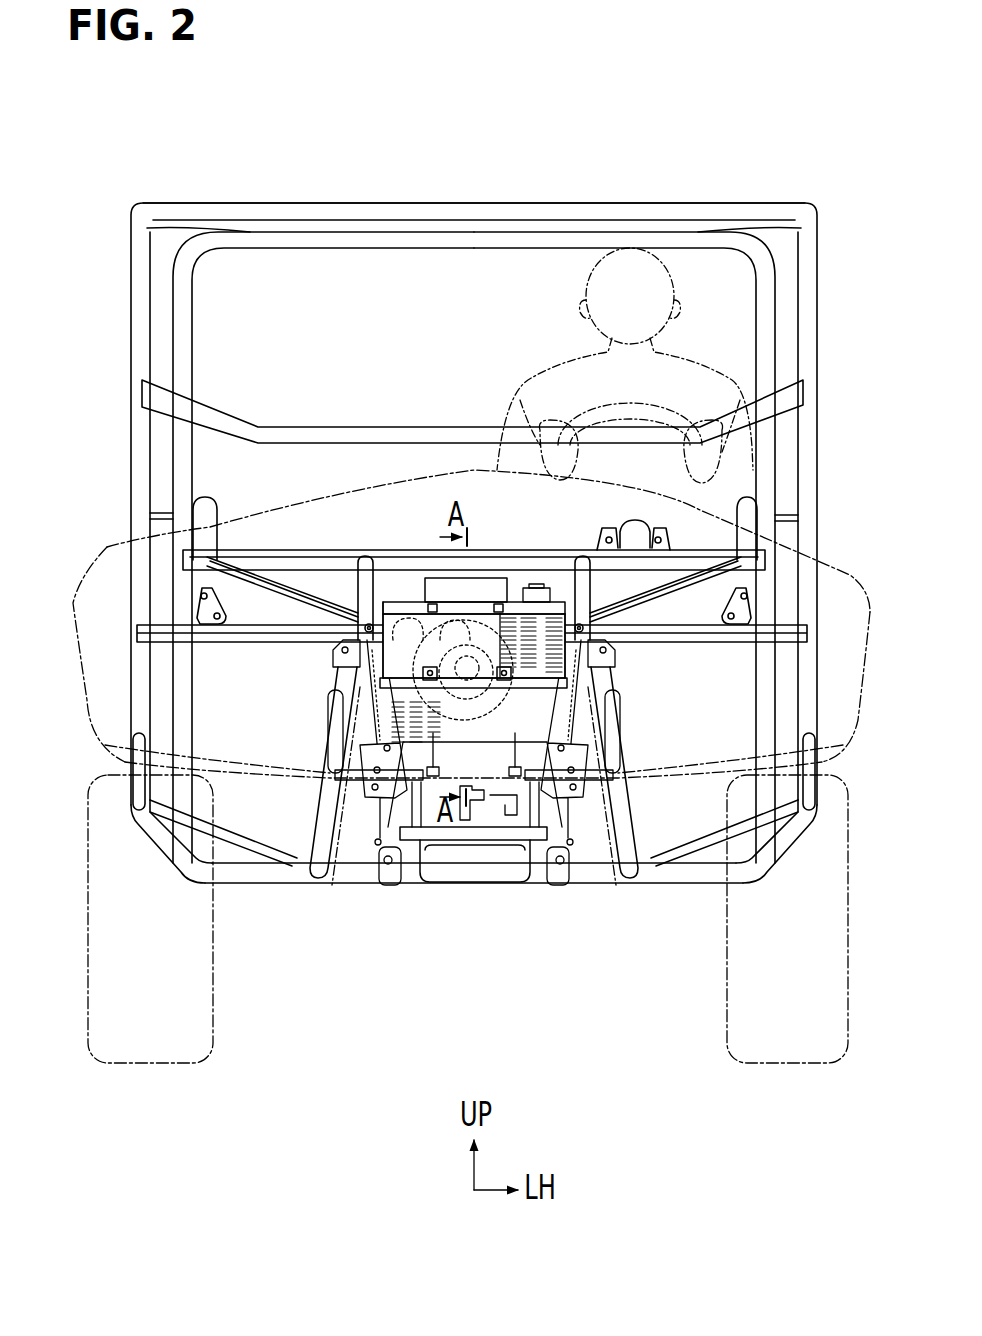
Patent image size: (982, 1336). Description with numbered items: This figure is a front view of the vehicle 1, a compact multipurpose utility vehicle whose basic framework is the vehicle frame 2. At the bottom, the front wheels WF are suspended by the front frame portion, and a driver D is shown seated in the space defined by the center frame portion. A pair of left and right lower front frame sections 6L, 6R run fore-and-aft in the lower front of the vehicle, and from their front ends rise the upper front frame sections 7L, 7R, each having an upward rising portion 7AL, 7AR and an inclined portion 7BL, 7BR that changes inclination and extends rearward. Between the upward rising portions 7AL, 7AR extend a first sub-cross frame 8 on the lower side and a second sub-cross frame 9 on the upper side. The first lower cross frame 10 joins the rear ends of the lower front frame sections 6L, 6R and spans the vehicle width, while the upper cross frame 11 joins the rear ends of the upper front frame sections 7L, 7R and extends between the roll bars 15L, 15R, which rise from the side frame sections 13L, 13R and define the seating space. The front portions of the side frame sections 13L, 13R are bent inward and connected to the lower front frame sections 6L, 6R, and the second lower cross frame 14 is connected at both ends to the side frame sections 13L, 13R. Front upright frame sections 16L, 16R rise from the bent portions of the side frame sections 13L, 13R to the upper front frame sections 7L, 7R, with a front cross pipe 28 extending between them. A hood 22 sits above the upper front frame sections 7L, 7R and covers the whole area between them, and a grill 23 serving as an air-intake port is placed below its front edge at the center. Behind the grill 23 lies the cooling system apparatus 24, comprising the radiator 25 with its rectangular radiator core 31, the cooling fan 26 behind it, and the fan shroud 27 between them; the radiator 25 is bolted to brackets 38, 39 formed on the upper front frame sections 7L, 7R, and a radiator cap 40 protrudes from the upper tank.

The vehicle 1 is at (533, 118).
The vehicle frame 2 is at (386, 198).
The right roll bar 15R is at (200, 222).
The left roll bar 15L is at (763, 222).
The hood 22 is at (107, 546).
The right inclined portion 7BR is at (365, 587).
The left inclined portion 7BL is at (593, 587).
The radiator 25 is at (397, 600).
The fan shroud 27 is at (411, 620).
The cooling fan 26 is at (445, 622).
The radiator core 31 is at (527, 617).
The upper cross frame 11 is at (523, 563).
The radiator cap 40 is at (540, 588).
The bracket 39 is at (343, 640).
The bracket 38 is at (605, 640).
The right upper front frame section 7R is at (357, 668).
The left upper front frame section 7L is at (591, 668).
The right upward rising portion 7AR is at (348, 677).
The left upward rising portion 7AL is at (604, 682).
The second sub-cross frame 9 is at (575, 723).
The right front upright frame section 16R is at (317, 823).
The left front upright frame section 16L is at (620, 823).
The first lower cross frame 10 is at (267, 858).
The second lower cross frame 14 is at (237, 837).
The right side frame section 13R is at (155, 835).
The left side frame section 13L is at (793, 838).
The grill 23 is at (343, 850).
The front cross pipe 28 is at (618, 867).
The right lower front frame section 6R is at (408, 885).
The left lower front frame section 6L is at (534, 885).
The cooling system apparatus 24 is at (495, 752).
The first sub-cross frame 8 is at (550, 868).
The driver D is at (560, 374).
The front wheels WF is at (160, 1067).